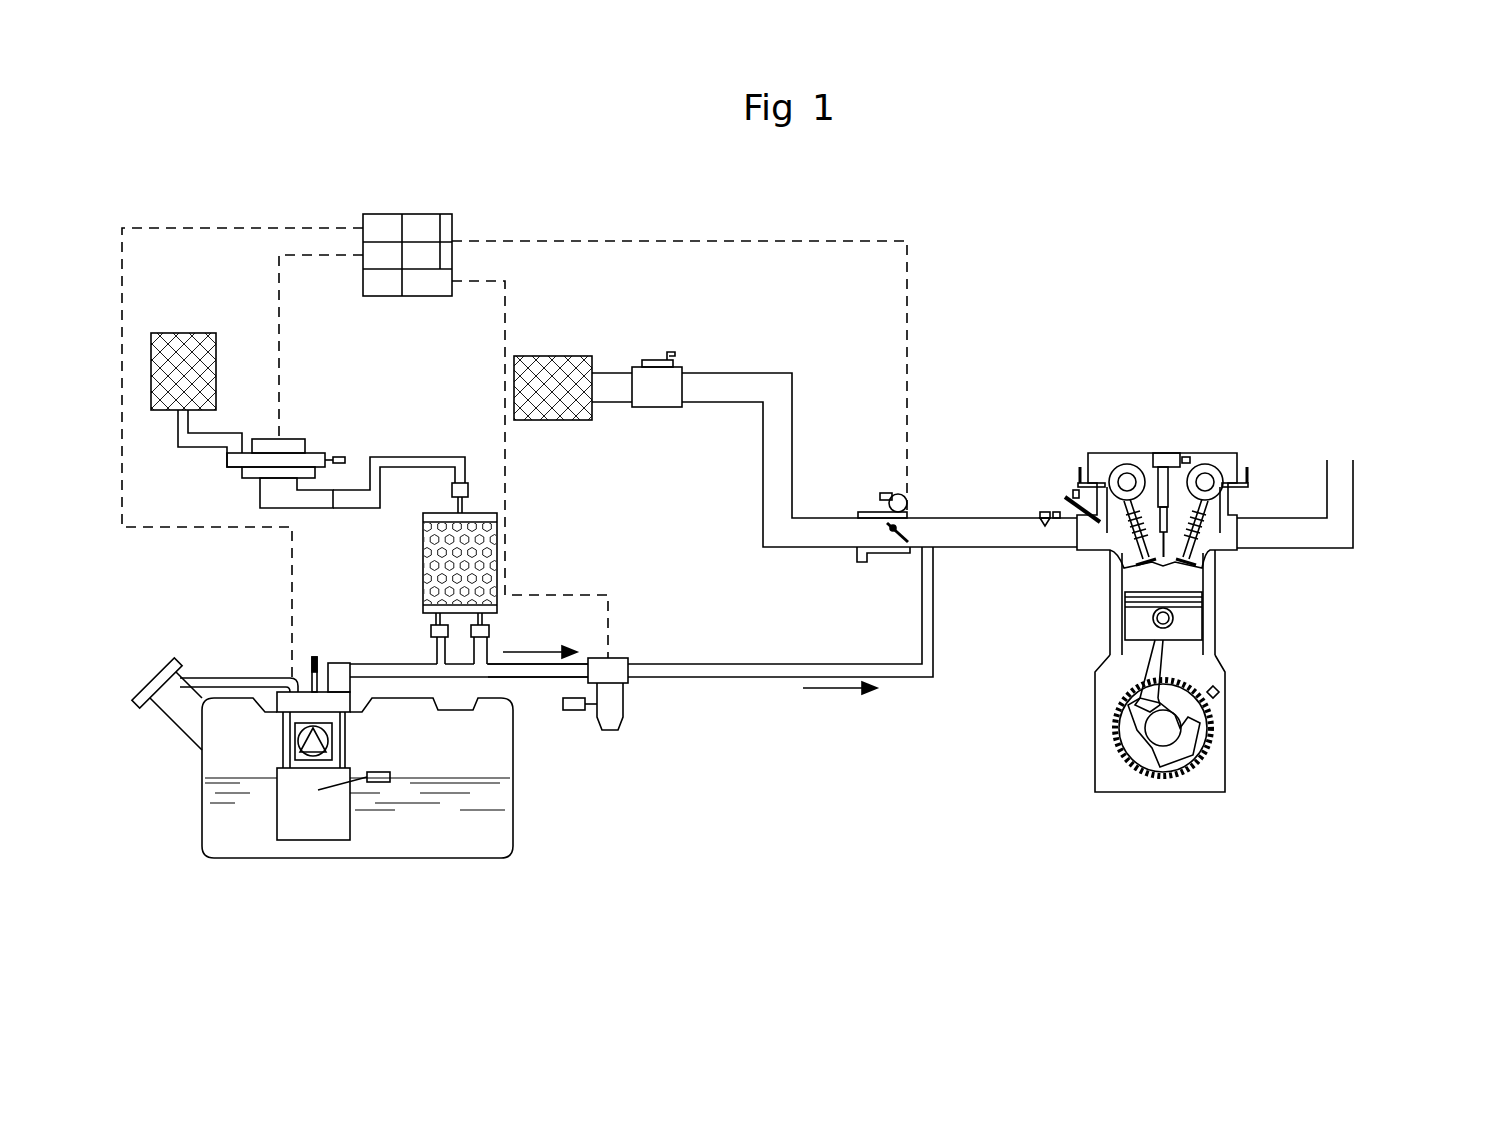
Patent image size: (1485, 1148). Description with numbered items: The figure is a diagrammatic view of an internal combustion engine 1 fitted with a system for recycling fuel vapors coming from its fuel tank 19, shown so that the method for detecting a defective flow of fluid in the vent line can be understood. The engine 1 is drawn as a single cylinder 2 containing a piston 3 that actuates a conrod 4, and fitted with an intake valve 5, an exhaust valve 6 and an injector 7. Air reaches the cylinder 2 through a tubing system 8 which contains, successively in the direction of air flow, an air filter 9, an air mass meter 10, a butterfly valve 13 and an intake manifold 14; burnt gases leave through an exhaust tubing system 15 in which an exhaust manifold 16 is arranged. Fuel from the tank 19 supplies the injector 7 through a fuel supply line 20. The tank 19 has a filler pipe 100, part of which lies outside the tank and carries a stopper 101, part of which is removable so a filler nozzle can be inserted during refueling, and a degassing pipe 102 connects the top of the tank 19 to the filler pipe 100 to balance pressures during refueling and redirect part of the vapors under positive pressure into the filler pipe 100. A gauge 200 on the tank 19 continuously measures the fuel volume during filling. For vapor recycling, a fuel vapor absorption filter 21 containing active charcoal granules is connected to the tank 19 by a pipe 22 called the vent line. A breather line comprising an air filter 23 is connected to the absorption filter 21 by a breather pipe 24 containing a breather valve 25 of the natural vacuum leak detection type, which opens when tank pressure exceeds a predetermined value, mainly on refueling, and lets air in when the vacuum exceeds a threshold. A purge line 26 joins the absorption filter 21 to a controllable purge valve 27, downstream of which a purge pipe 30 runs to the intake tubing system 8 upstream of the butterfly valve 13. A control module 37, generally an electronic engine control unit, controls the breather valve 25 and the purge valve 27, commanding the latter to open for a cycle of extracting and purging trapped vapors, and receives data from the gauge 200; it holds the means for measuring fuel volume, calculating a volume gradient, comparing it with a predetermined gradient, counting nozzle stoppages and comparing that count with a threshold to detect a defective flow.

The internal combustion engine 1 is at (1188, 814).
The cylinder 2 is at (1210, 775).
The piston 3 is at (1173, 578).
The conrod 4 is at (1155, 662).
The intake valve 5 is at (1108, 556).
The exhaust valve 6 is at (1197, 540).
The injector 7 is at (1163, 483).
The tubing system 8 is at (930, 516).
The air filter 9 is at (555, 372).
The air mass meter 10 is at (665, 385).
The butterfly valve 13 is at (867, 512).
The intake manifold 14 is at (1103, 487).
The exhaust tubing system 15 is at (1342, 490).
The exhaust manifold 16 is at (1228, 487).
The fuel tank 19 is at (478, 843).
The fuel supply line 20 is at (313, 657).
The fuel vapor absorption filter 21 is at (440, 578).
The vent line 22 is at (392, 668).
The air filter 23 is at (190, 345).
The breather pipe 24 is at (420, 457).
The breather valve 25 is at (265, 440).
The purge line 26 is at (555, 670).
The purge valve 27 is at (610, 710).
The purge pipe 30 is at (900, 672).
The control module 37 is at (412, 213).
The filler pipe 100 is at (172, 712).
The stopper 101 is at (147, 687).
The degassing pipe 102 is at (233, 683).
The gauge 200 is at (380, 782).